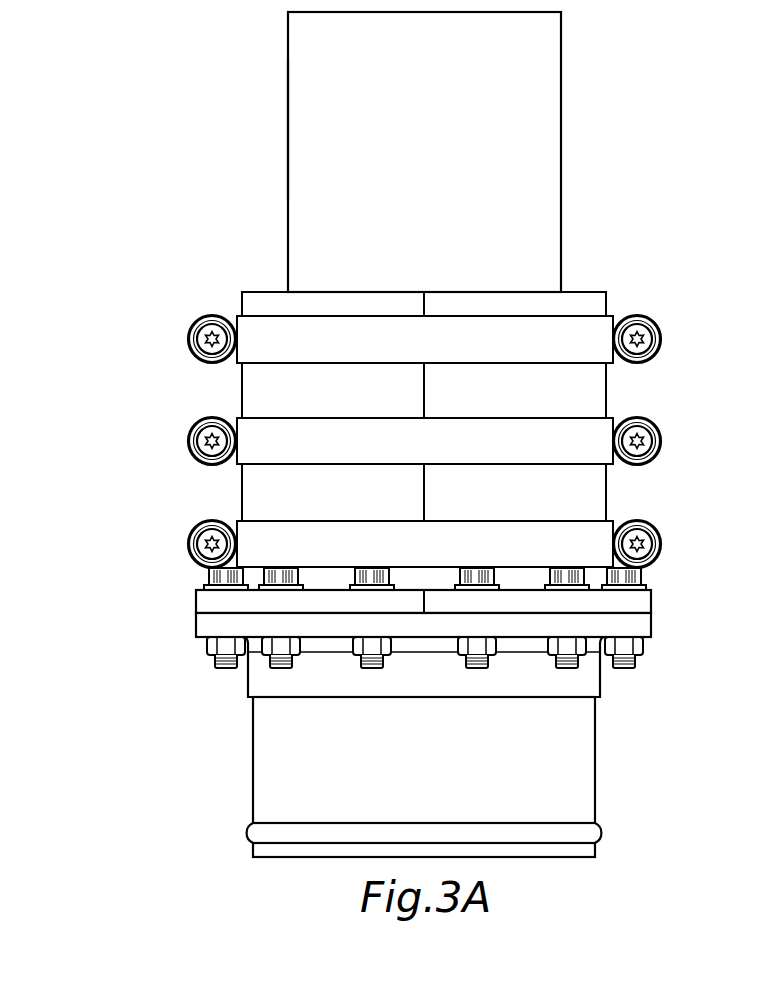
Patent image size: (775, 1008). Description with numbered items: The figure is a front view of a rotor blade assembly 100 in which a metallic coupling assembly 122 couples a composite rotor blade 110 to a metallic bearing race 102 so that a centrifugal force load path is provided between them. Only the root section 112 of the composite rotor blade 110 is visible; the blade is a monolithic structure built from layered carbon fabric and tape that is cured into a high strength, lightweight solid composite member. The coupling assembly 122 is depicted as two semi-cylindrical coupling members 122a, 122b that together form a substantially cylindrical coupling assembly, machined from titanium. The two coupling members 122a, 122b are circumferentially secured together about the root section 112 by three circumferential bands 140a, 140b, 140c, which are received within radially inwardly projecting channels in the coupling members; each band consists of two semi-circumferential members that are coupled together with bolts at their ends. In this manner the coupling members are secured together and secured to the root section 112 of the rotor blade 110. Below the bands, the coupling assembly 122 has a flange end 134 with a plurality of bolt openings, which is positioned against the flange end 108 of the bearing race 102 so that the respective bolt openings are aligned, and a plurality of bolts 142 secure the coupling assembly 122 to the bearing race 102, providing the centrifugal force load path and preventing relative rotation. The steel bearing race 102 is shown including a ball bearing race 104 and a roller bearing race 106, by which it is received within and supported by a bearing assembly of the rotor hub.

The rotor blade assembly 100 is at (419, 436).
The metallic bearing race 102 is at (253, 745).
The ball bearing race 104 is at (266, 833).
The roller bearing race 106 is at (248, 680).
The flange end 108 is at (196, 625).
The composite rotor blade 110 is at (288, 76).
The root section 112 is at (288, 151).
The metallic coupling assembly 122 is at (368, 406).
The semi-cylindrical coupling member 122a is at (348, 499).
The semi-cylindrical coupling member 122b is at (568, 499).
The flange end 134 is at (196, 603).
The circumferential band 140a is at (587, 323).
The circumferential band 140b is at (587, 425).
The circumferential band 140c is at (587, 527).
The bolts 142 is at (641, 578).